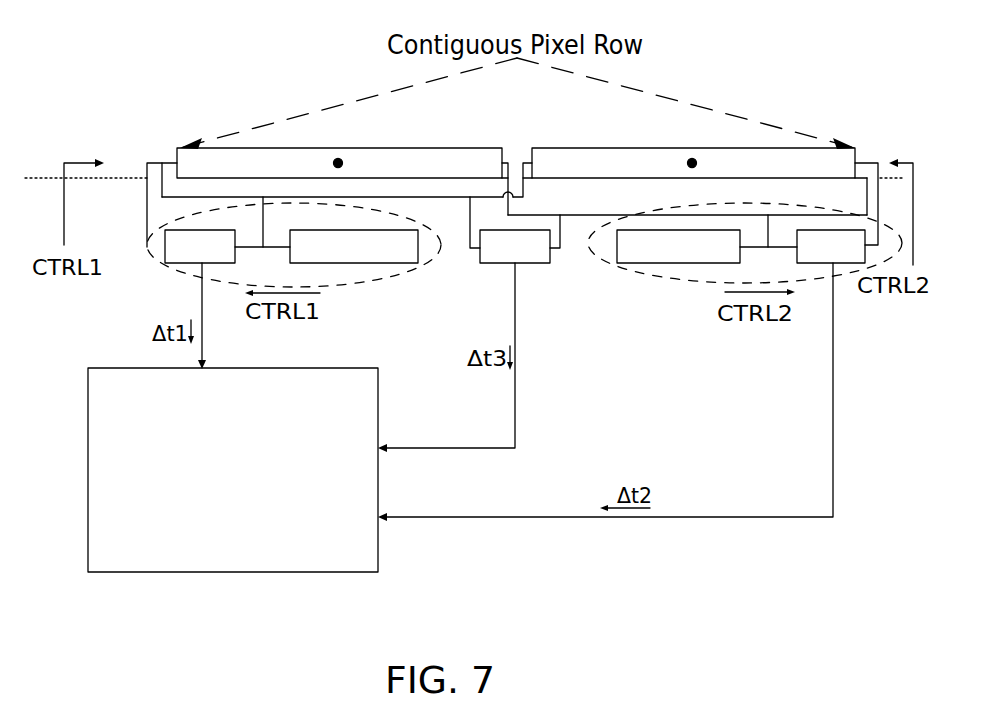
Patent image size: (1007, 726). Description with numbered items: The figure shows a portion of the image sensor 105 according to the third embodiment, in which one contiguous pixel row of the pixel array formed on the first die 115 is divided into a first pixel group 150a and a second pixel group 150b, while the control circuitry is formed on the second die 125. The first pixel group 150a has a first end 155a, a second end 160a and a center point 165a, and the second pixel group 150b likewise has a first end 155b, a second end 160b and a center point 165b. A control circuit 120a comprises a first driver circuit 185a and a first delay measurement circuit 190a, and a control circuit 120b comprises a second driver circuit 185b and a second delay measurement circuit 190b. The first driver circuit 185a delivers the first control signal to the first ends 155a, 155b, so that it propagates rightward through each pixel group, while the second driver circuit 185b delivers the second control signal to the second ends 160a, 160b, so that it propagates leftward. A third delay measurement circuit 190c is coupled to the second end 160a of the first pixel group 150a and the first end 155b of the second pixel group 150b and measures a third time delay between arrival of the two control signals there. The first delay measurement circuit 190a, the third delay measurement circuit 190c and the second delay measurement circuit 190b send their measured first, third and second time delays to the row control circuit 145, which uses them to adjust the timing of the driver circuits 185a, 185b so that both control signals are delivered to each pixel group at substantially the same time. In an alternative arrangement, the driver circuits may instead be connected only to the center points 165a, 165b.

The image sensor 105 is at (145, 43).
The first die 115 is at (45, 157).
The second die 125 is at (47, 229).
The control circuit 120a is at (180, 270).
The control circuit 120b is at (838, 280).
The row control circuit 145 is at (255, 543).
The first pixel group 150a is at (277, 148).
The second pixel group 150b is at (737, 148).
The first end of the first pixel group 155a is at (176, 162).
The first end of the second pixel group 155b is at (527, 163).
The second end of the first pixel group 160a is at (503, 163).
The second end of the second pixel group 160b is at (858, 161).
The center point of the first pixel group 165a is at (342, 160).
The center point of the second pixel group 165b is at (688, 160).
The first driver circuit 185a is at (380, 259).
The second driver circuit 185b is at (704, 259).
The first delay measurement circuit 190a is at (226, 259).
The second delay measurement circuit 190b is at (857, 259).
The third delay measurement circuit 190c is at (541, 259).